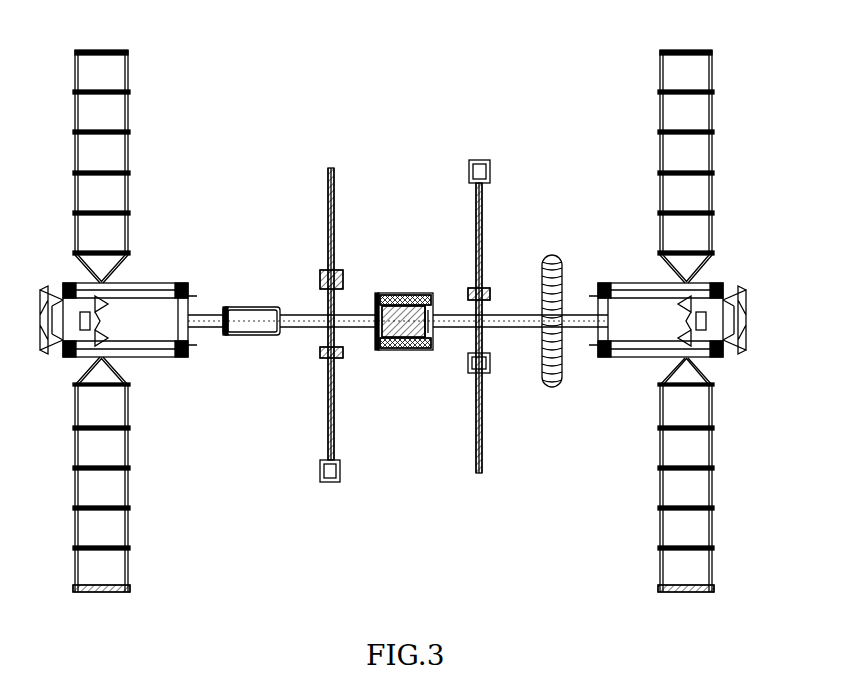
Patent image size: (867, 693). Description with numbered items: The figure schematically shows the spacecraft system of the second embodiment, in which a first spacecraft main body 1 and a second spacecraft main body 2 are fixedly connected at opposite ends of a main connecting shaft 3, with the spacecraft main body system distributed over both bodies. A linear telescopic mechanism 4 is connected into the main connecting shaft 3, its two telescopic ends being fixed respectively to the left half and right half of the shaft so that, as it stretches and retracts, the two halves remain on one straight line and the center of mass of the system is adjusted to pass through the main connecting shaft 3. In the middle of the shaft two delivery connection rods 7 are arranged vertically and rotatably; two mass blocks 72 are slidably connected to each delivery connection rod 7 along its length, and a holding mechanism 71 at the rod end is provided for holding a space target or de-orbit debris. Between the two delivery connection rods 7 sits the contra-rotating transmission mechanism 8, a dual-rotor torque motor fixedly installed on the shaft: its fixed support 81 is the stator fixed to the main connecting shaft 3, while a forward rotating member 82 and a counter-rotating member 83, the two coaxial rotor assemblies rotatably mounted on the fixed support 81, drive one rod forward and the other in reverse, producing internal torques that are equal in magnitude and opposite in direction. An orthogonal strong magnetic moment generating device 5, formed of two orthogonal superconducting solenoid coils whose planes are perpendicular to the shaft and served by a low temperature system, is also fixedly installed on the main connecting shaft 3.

The first spacecraft main body 1 is at (120, 160).
The second spacecraft main body 2 is at (672, 160).
The main connecting shaft 3 is at (312, 330).
The linear telescopic mechanism 4 is at (240, 318).
The orthogonal strong magnetic moment generating device 5 is at (562, 292).
The delivery connection rod 7 is at (332, 220).
The holding mechanism 71 is at (490, 165).
The mass block 72 is at (325, 272).
The contra-rotating transmission mechanism 8 is at (415, 290).
The fixed support 81 is at (383, 293).
The forward rotating member 82 is at (408, 300).
The counter-rotating member 83 is at (420, 297).